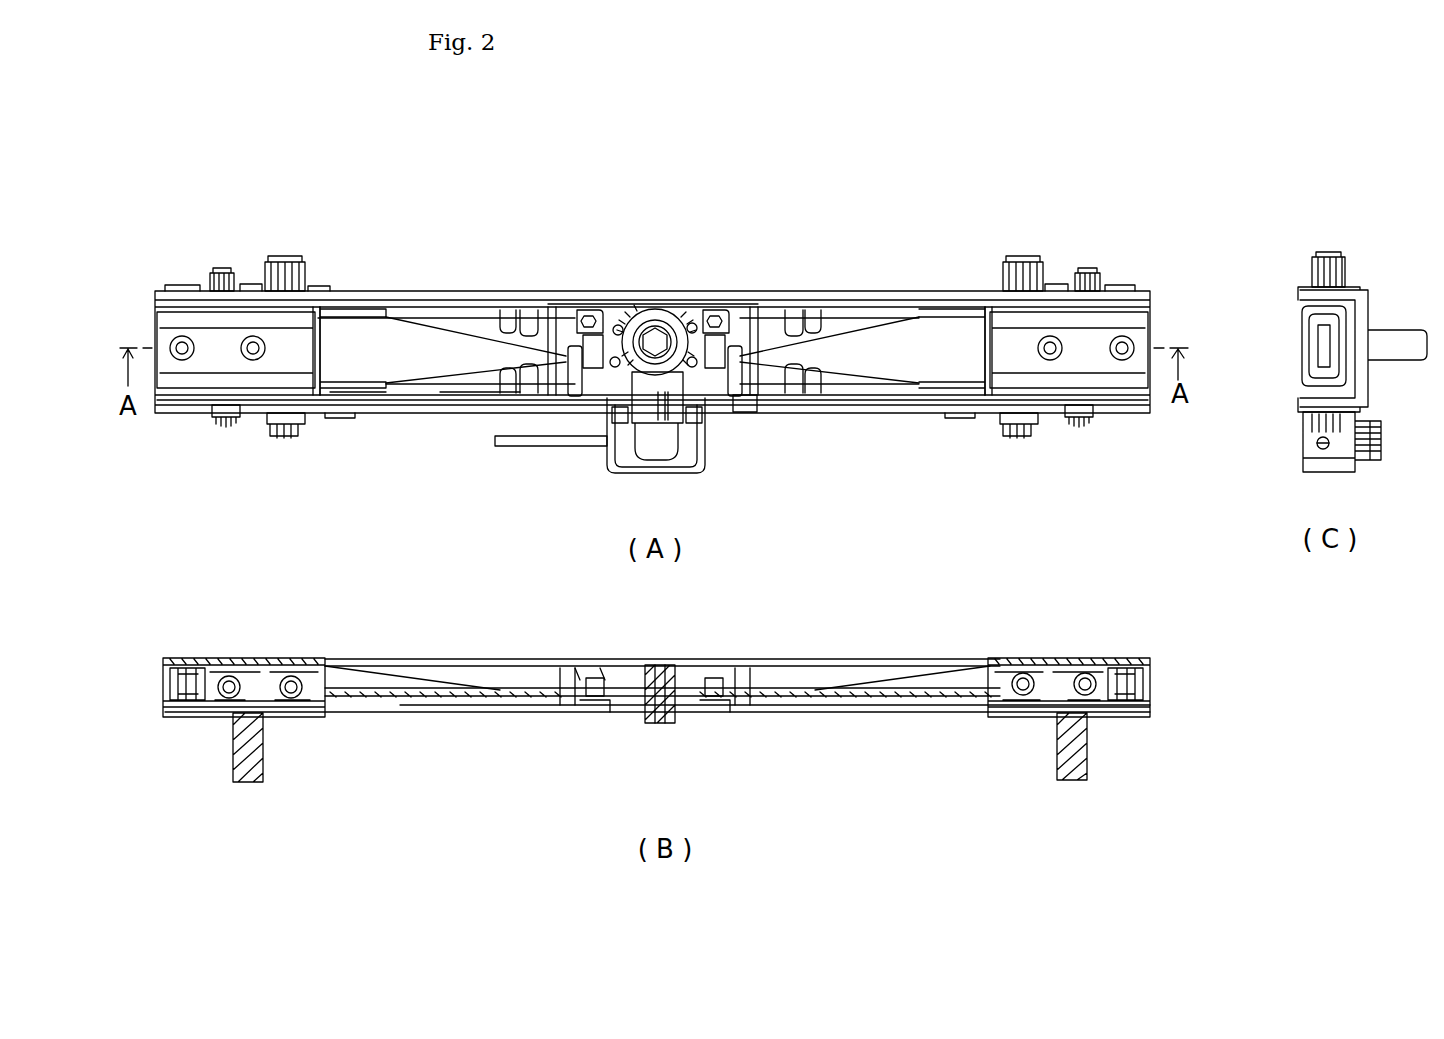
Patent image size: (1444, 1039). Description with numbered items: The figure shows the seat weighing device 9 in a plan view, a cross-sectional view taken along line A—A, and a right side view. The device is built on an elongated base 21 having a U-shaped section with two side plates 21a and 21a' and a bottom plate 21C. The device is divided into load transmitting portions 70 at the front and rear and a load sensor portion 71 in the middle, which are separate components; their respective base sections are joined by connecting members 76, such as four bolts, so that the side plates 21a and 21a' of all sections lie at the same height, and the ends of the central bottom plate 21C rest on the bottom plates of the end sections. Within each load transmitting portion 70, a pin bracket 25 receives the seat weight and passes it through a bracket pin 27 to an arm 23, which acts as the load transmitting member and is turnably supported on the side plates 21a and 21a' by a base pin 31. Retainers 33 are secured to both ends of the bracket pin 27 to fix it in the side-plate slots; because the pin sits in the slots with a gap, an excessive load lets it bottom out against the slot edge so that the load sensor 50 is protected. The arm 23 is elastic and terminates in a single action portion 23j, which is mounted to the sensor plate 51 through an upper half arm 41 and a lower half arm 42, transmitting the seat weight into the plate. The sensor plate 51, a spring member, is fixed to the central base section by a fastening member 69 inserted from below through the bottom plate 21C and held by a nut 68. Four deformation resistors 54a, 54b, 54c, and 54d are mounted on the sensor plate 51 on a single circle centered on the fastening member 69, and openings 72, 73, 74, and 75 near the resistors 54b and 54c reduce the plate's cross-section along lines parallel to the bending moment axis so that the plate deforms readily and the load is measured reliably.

The seat weighing device 9 is at (891, 224).
The base 21 is at (1375, 290).
The side plate 21a is at (660, 432).
The side plate 21a' is at (345, 445).
The bottom plate 21C is at (450, 405).
The arm 23 is at (952, 345).
The action portion 23j is at (793, 308).
The pin bracket 25 is at (215, 345).
The bracket pin 27 is at (225, 428).
The base pin 31 is at (284, 438).
The retainer 33 is at (221, 268).
The upper half arm 41 is at (744, 355).
The lower half arm 42 is at (597, 700).
The load sensor 50 is at (628, 322).
The sensor plate 51 is at (657, 328).
The deformation resistor 54a is at (714, 335).
The deformation resistor 54b is at (702, 418).
The deformation resistor 54c is at (615, 423).
The deformation resistor 54d is at (593, 335).
The nut 68 is at (645, 473).
The fastening member 69 is at (676, 460).
The load transmitting portion 70 is at (418, 242).
The load sensor portion 71 is at (631, 205).
The opening 72 is at (722, 310).
The opening 73 is at (700, 365).
The opening 74 is at (590, 446).
The opening 75 is at (586, 310).
The connecting member 76 is at (508, 310).